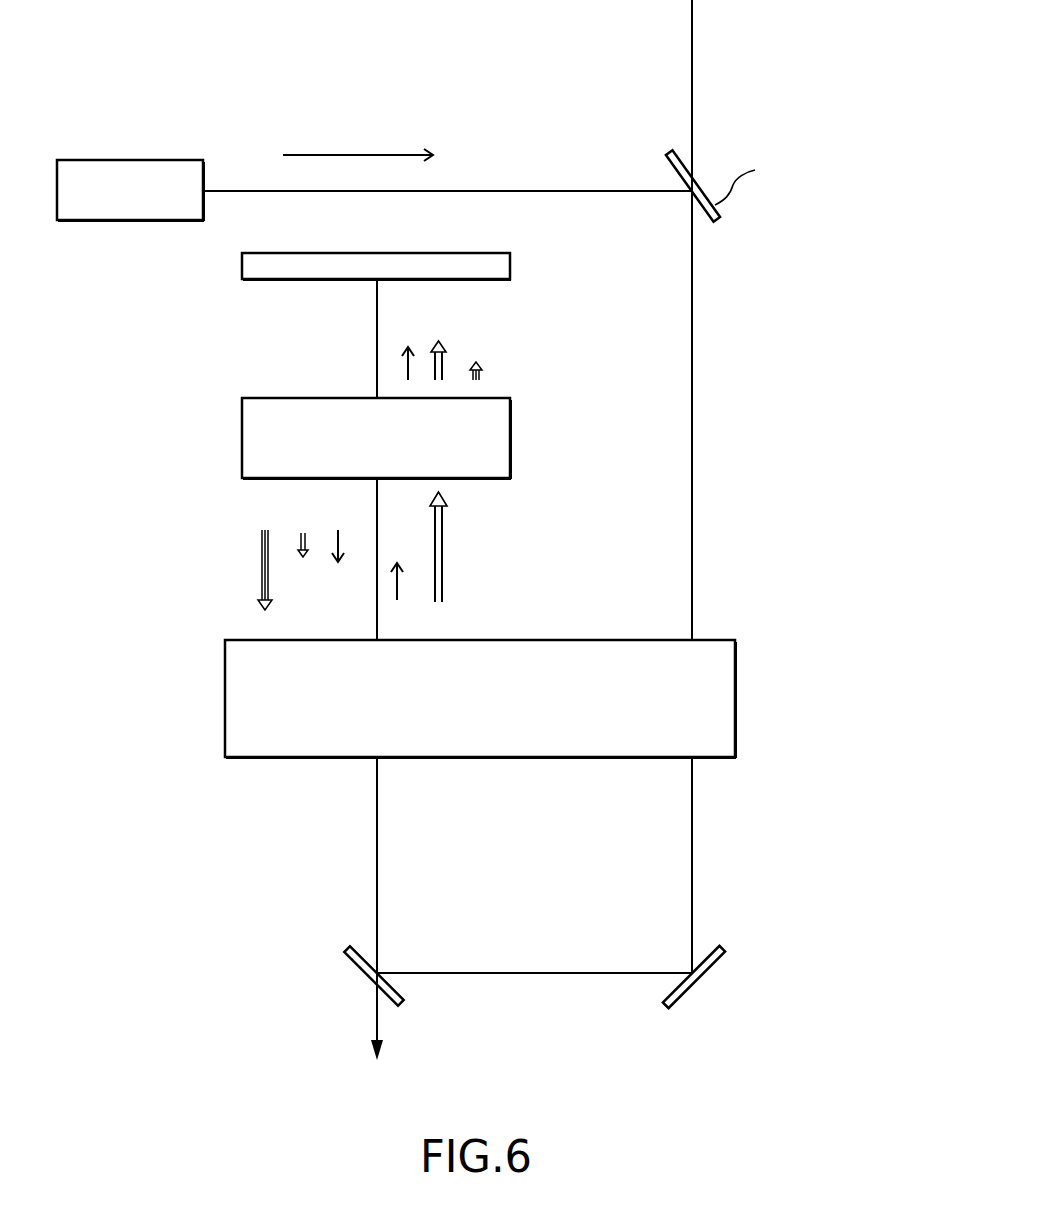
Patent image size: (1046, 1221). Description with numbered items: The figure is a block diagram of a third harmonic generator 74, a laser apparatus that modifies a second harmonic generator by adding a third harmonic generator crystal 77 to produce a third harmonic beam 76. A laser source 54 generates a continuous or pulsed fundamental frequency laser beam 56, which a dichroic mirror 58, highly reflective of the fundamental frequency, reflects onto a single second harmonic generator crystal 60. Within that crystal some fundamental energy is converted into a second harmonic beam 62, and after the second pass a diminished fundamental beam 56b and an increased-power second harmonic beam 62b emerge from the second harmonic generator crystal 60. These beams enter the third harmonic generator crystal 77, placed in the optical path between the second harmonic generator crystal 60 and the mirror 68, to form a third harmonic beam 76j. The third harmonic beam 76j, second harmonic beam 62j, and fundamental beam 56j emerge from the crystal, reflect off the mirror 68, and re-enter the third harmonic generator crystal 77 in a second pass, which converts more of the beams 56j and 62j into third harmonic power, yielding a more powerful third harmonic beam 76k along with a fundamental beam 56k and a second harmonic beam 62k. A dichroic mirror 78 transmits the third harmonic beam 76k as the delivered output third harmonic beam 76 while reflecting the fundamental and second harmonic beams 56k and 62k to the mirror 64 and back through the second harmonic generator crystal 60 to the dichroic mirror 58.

The laser source 54 is at (124, 160).
The fundamental frequency laser beam 56 is at (340, 155).
The dichroic mirror 58 is at (668, 152).
The second harmonic beam 62 is at (692, 29).
The mirror 68 is at (510, 263).
The fundamental beam 56j is at (410, 363).
The second harmonic beam 62j is at (444, 362).
The third harmonic beam 76j is at (478, 375).
The third harmonic generator crystal 77 is at (510, 438).
The third harmonic beam 76k is at (262, 545).
The second harmonic beam 62k is at (298, 543).
The fundamental beam 56k is at (340, 535).
The fundamental beam 56b is at (398, 582).
The second harmonic beam 62b is at (443, 566).
The second harmonic generator crystal 60 is at (735, 707).
The third harmonic generator 74 is at (218, 884).
The dichroic mirror 78 is at (377, 988).
The third harmonic beam 76 is at (380, 1028).
The mirror 64 is at (710, 968).